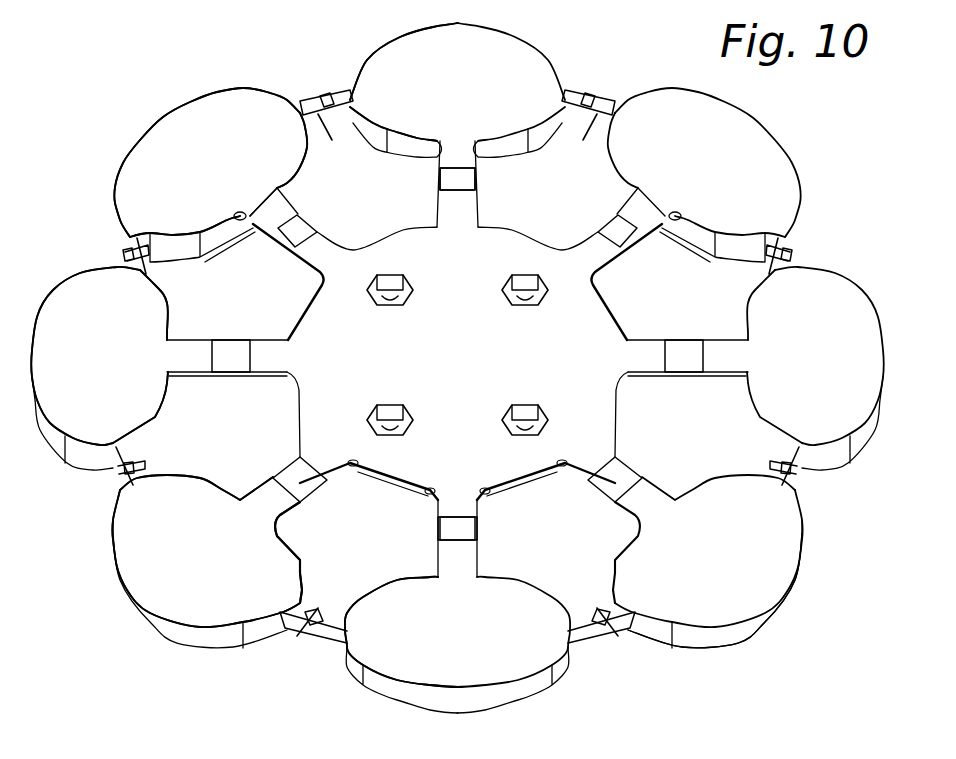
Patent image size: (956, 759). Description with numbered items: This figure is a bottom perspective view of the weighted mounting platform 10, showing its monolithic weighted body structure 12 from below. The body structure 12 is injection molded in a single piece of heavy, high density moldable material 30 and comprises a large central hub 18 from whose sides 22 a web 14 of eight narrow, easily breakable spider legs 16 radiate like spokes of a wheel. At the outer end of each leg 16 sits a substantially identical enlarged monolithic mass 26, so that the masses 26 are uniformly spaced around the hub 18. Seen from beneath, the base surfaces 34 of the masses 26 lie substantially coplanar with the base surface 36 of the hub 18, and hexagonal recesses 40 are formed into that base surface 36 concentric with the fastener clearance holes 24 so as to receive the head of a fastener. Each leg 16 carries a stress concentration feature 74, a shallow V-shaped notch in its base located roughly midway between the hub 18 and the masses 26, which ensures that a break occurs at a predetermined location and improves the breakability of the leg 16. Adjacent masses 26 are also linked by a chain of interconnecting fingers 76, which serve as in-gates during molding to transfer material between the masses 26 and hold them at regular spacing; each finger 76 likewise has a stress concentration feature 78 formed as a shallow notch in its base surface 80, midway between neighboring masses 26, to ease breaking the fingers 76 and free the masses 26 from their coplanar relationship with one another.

The weighted mounting platform 10 is at (120, 92).
The weighted body structure 12 is at (801, 131).
The web 14 is at (583, 233).
The breakable spider legs 16 is at (486, 510).
The central hub 18 is at (403, 230).
The sides 22 is at (532, 482).
The fastener clearance holes 24 is at (522, 432).
The monolithic masses 26 is at (533, 583).
The injection moldable material 30 is at (768, 603).
The base surfaces 34 is at (468, 639).
The base surface 36 is at (446, 369).
The recesses 40 is at (534, 404).
The stress concentration features 74 is at (643, 477).
The interconnecting fingers 76 is at (583, 643).
The stress concentration features 78 is at (613, 630).
The base surfaces 80 is at (576, 620).